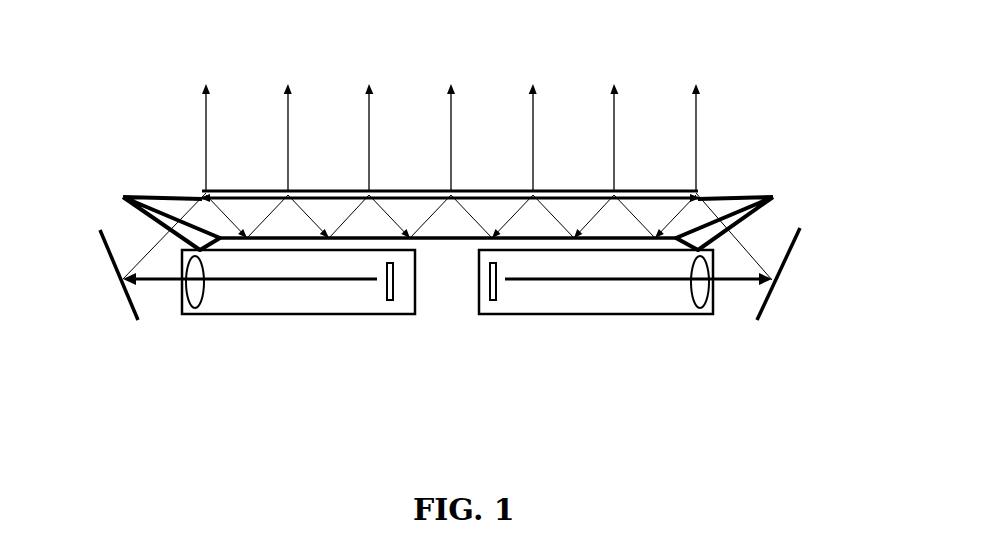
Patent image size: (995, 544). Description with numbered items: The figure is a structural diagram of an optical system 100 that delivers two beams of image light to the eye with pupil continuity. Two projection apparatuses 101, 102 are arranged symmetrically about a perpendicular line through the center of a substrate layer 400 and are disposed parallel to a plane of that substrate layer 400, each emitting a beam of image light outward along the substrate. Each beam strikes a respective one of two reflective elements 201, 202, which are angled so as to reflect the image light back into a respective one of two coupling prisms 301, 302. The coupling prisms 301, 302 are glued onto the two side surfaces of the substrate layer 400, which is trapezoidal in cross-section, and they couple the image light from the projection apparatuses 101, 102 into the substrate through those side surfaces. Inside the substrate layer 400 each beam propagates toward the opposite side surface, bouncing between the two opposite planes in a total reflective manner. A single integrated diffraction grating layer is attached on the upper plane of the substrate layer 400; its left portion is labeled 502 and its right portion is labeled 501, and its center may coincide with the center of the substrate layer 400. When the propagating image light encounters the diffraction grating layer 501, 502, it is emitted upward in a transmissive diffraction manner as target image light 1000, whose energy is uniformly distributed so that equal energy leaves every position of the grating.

The optical system 100 is at (456, 245).
The projection apparatus 101 is at (683, 317).
The projection apparatus 102 is at (257, 295).
The reflective element 201 is at (775, 268).
The reflective element 202 is at (113, 270).
The coupling prism 301 is at (747, 213).
The coupling prism 302 is at (148, 210).
The substrate layer 400 is at (712, 205).
The right portion of the diffraction grating layer 501 is at (654, 190).
The left portion of the diffraction grating layer 502 is at (230, 190).
The target image light 1000 is at (699, 85).